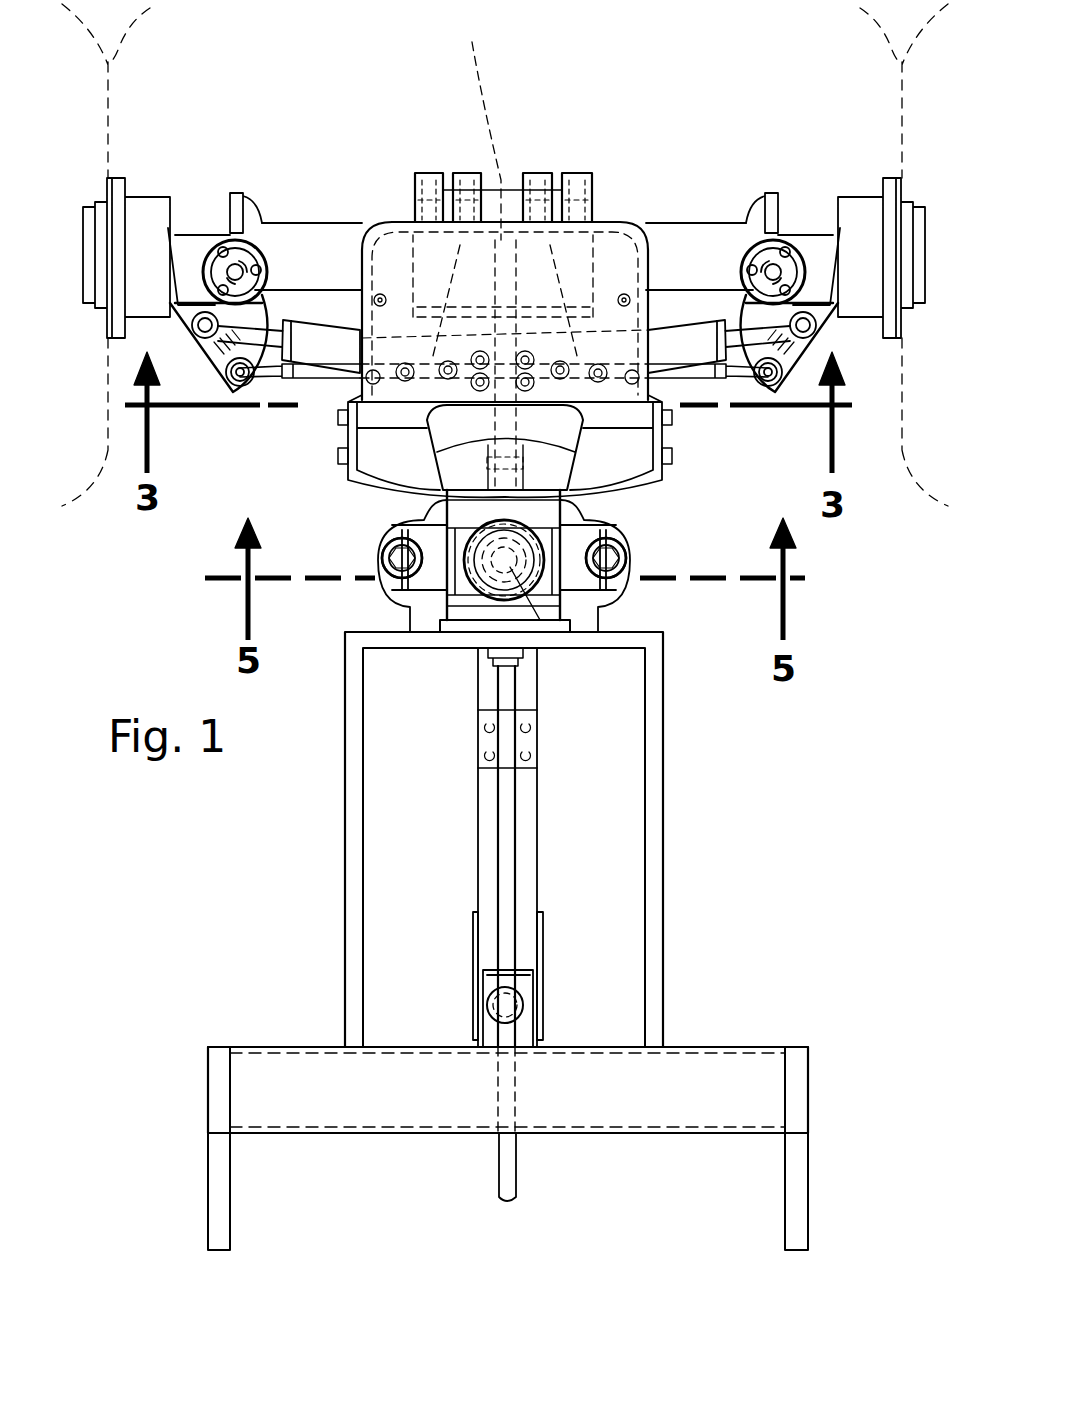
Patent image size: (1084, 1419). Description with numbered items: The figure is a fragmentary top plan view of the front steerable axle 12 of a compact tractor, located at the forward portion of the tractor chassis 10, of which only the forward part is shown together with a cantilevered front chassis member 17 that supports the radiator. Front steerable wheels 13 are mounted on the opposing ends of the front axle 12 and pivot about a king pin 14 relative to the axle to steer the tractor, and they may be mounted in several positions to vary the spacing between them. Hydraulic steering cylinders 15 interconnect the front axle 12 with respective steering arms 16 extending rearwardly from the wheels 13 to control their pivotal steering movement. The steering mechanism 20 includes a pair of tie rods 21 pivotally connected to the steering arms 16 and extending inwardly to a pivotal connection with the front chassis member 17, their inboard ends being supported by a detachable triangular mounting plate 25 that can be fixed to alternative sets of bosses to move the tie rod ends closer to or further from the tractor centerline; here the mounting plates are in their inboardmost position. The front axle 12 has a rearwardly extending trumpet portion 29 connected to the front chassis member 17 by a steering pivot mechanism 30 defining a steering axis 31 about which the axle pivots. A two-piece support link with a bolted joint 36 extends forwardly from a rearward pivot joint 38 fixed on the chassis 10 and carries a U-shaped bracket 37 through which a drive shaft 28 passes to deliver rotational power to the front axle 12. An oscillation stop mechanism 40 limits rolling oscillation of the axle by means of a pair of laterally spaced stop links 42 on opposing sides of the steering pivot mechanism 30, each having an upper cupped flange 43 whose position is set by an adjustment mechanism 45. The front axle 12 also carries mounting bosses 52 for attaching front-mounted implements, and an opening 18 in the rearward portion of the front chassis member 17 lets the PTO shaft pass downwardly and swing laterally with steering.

The tractor chassis 10 is at (208, 1082).
The front steerable axle 12 is at (640, 240).
The front steerable wheels 13 is at (135, 18).
The king pin 14 is at (234, 262).
The hydraulic steering cylinders 15 is at (298, 330).
The steering arms 16 is at (210, 355).
The front chassis member 17 is at (372, 240).
The opening 18 is at (570, 445).
The steering mechanism 20 is at (262, 417).
The tie rods 21 is at (325, 330).
The triangular mounting plate 25 is at (469, 132).
The drive shaft 28 is at (490, 433).
The trumpet portion 29 is at (565, 457).
The steering pivot mechanism 30 is at (619, 599).
The steering axis 31 is at (540, 620).
The bolted joint 36 is at (537, 740).
The U-shaped bracket 37 is at (543, 952).
The rearward pivot joint 38 is at (515, 1006).
The oscillation stop mechanism 40 is at (642, 548).
The stop links 42 is at (383, 580).
The upper cupped flange 43 is at (390, 540).
The adjustment mechanism 45 is at (412, 620).
The mounting bosses 52 is at (430, 173).